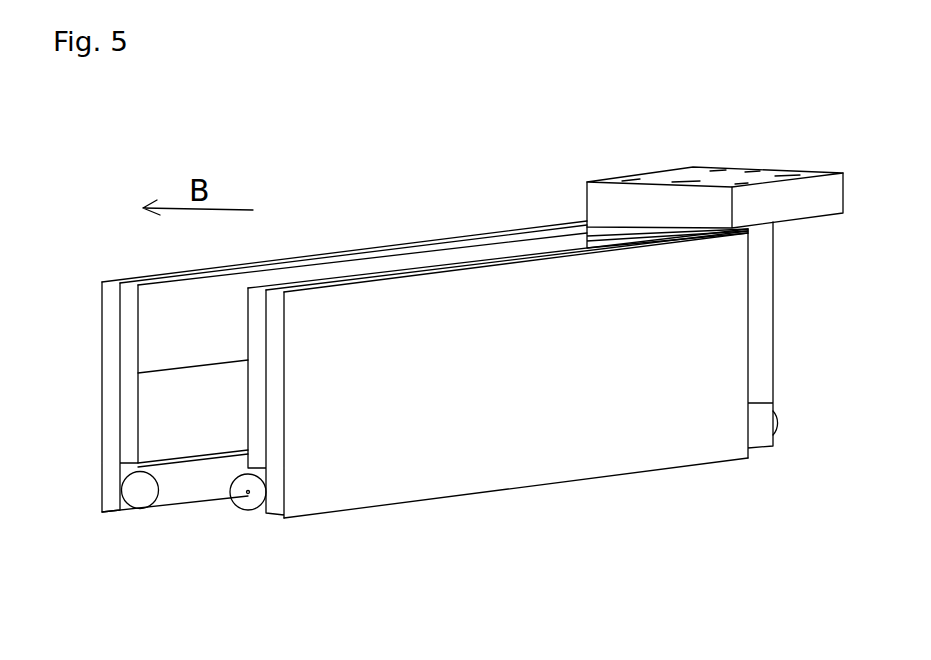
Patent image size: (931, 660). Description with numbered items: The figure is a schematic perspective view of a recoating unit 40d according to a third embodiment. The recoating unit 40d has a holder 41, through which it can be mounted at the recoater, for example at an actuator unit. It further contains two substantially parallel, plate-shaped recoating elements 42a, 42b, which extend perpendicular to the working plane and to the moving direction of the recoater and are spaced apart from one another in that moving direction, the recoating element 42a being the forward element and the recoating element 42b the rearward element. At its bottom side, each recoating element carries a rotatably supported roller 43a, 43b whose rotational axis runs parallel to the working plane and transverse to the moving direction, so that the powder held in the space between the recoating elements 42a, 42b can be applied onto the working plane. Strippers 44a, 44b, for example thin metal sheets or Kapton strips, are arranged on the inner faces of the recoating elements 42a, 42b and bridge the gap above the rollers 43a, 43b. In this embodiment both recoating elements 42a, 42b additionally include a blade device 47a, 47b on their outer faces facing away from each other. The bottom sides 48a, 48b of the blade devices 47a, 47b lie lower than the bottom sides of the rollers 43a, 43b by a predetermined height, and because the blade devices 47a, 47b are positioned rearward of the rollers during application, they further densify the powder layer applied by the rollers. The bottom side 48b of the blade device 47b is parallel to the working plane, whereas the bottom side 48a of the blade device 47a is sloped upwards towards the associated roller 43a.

The recoating unit 40d is at (482, 147).
The holder 41 is at (718, 186).
The recoating element 42a is at (385, 265).
The recoating element 42b is at (510, 293).
The roller 43a is at (192, 485).
The roller 43b is at (253, 494).
The stripper 44a is at (154, 446).
The stripper 44b is at (232, 462).
The blade device 47a is at (113, 496).
The blade device 47b is at (603, 455).
The bottom side 48a is at (118, 512).
The bottom side 48b is at (448, 500).